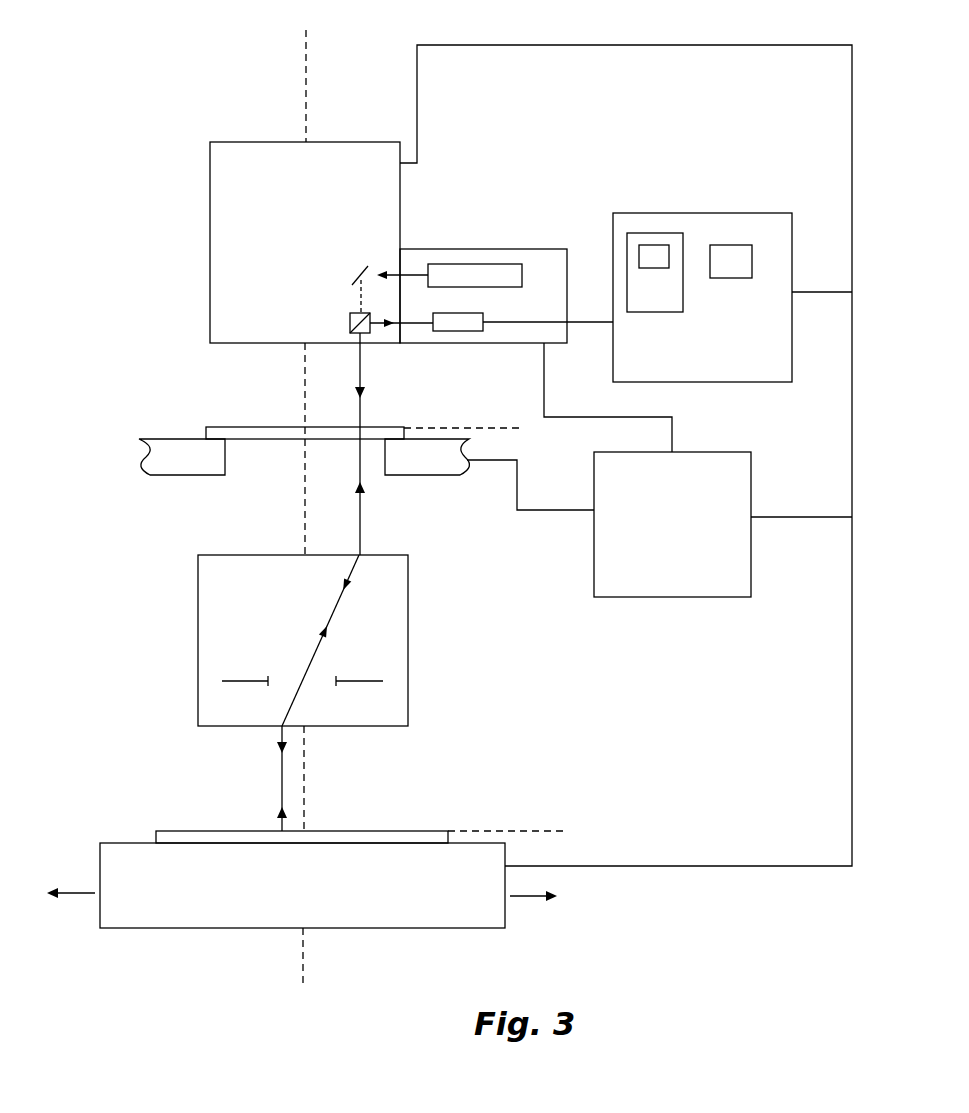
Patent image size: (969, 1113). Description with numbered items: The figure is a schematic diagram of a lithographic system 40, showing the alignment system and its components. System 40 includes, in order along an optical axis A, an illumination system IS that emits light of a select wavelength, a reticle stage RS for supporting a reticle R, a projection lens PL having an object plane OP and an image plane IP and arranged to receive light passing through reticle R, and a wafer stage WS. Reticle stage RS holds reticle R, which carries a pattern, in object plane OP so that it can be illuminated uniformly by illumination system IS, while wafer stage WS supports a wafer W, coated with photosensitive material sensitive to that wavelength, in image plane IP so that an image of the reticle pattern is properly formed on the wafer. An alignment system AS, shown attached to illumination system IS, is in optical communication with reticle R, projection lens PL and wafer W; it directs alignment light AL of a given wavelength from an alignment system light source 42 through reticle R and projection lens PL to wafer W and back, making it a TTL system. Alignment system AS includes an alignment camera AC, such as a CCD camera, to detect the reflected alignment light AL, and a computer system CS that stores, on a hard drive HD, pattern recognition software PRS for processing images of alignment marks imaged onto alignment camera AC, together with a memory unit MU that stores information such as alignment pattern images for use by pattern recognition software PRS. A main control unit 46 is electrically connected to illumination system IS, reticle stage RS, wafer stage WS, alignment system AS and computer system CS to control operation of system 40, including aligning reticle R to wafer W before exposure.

The lithographic system 40 is at (226, 53).
The optical axis A is at (307, 83).
The illumination system IS is at (252, 176).
The alignment system AS is at (418, 240).
The alignment system light source 42 is at (463, 270).
The alignment camera AC is at (455, 333).
The computer system CS is at (786, 371).
The hard drive HD is at (637, 240).
The pattern recognition software PRS is at (655, 253).
The memory unit MU is at (730, 258).
The alignment light AL is at (362, 408).
The reticle R is at (237, 427).
The object plane OP is at (498, 428).
The reticle stage RS is at (417, 465).
The main control unit 46 is at (690, 535).
The projection lens PL is at (242, 591).
The wafer W is at (425, 831).
The image plane IP is at (532, 831).
The wafer stage WS is at (493, 920).